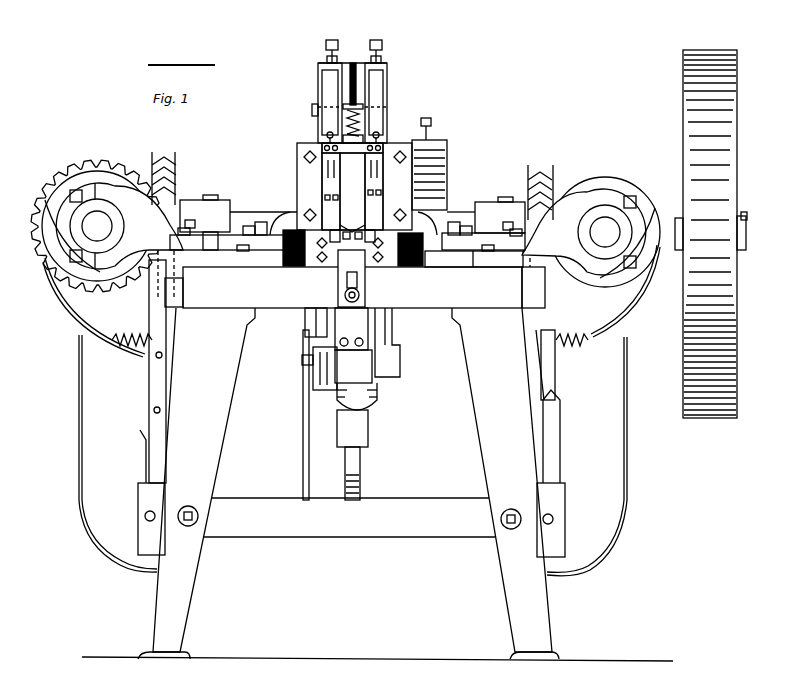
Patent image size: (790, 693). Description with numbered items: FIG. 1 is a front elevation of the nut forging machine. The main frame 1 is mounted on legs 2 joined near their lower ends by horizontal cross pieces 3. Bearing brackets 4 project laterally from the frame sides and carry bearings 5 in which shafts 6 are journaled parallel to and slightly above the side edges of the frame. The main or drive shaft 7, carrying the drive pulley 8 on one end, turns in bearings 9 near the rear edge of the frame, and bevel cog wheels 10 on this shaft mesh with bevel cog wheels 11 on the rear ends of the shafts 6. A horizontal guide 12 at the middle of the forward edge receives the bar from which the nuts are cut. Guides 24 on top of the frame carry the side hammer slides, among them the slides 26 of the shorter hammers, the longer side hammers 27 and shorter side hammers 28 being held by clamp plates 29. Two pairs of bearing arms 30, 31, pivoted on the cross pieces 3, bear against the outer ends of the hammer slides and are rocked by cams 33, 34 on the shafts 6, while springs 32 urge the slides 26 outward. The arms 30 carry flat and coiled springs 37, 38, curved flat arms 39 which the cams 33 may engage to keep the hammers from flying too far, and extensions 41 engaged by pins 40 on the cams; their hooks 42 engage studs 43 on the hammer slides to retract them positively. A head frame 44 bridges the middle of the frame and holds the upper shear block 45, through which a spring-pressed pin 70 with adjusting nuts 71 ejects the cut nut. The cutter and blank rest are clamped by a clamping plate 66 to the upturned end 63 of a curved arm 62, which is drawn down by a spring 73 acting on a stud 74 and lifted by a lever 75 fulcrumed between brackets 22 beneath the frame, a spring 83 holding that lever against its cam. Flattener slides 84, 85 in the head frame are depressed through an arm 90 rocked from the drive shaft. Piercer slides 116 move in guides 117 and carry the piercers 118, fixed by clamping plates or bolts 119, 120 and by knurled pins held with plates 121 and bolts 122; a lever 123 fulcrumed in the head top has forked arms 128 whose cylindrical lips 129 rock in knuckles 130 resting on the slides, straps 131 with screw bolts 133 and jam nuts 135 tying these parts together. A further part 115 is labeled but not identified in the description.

The main frame 1 is at (352, 272).
The legs 2 is at (348, 483).
The horizontal cross pieces 3 is at (349, 517).
The bearing brackets 4 is at (351, 229).
The bearings 5 is at (351, 229).
The shafts 6 is at (351, 229).
The main or drive shaft 7 is at (250, 212).
The drive pulley 8 is at (711, 234).
The bearings 9 is at (490, 192).
The bevel cog wheels 10 is at (536, 175).
The bevel cog wheels 11 is at (80, 172).
The horizontal guide 12 is at (345, 255).
The brackets 22 is at (322, 337).
The guides 24 is at (218, 241).
The hammer slides 26 is at (336, 244).
The longer side hammers 27 is at (292, 266).
The shorter side hammers 28 is at (283, 212).
The clamp plates 29 is at (260, 222).
The bearing arms 30 is at (570, 384).
The bearing arms 31 is at (141, 430).
The springs 32 is at (545, 322).
The cams 33 is at (664, 285).
The cams 34 is at (76, 178).
The flat springs 37 is at (79, 393).
The coiled springs 38 is at (130, 336).
The curved flat arms 39 is at (60, 300).
The pins 40 is at (115, 178).
The extensions 41 is at (116, 175).
The hooks 42 is at (350, 223).
The studs 43 is at (192, 218).
The head frame 44 is at (297, 150).
The upper shear block 45 is at (380, 254).
The curved arm 62 is at (313, 360).
The forward end of arm 63 is at (353, 366).
The clamping plate 66 is at (351, 329).
The pin 70 is at (326, 132).
The nuts 71 is at (362, 128).
The spring 73 is at (363, 108).
The stud 74 is at (300, 365).
The lever 75 is at (368, 425).
The spring 83 is at (360, 457).
The flattener slide 84 is at (317, 250).
The flattener slide 85 is at (386, 248).
The arm 90 is at (447, 148).
The block 115 is at (324, 249).
The piercer slides 116 is at (335, 165).
The guides 117 is at (357, 186).
The piercers 118 is at (368, 270).
The clamping plates or bolts 119 is at (338, 192).
The clamping plates or bolts 120 is at (357, 191).
The plates 121 is at (352, 152).
The bolts 122 is at (357, 147).
The lever 123 is at (356, 70).
The forked arms 128 is at (358, 102).
The cylindrical lips 129 is at (312, 110).
The knuckle 130 is at (360, 129).
The straps 131 is at (318, 85).
The screw bolts 133 is at (338, 45).
The jam nuts 135 is at (352, 56).